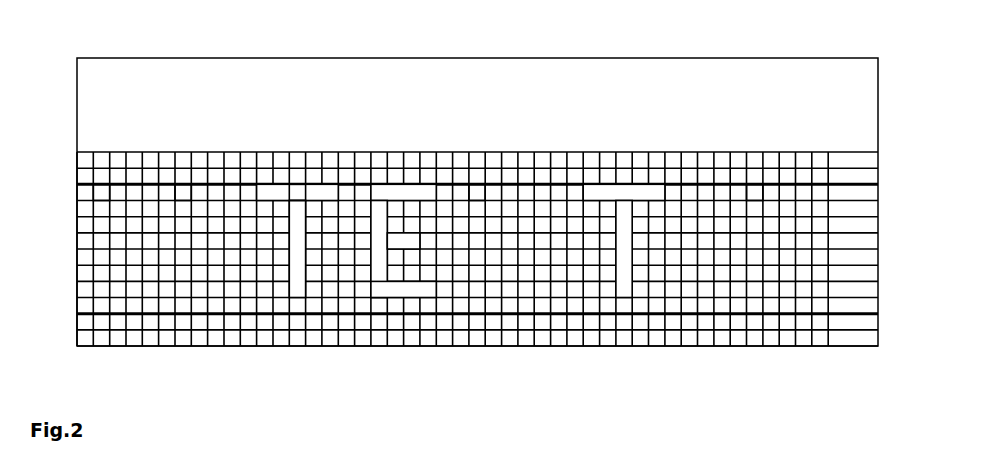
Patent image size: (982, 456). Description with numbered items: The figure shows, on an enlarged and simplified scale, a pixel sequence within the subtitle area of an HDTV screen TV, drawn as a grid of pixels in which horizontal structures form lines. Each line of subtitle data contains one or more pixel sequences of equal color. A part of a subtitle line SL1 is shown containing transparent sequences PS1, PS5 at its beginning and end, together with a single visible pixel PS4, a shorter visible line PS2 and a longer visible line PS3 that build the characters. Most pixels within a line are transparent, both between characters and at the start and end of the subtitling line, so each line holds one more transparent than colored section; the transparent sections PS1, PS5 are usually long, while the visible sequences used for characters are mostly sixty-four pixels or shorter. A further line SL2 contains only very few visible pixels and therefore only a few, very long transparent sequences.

The HDTV screen TV is at (140, 73).
The subtitle line SL1 is at (77, 184).
The line SL2 is at (77, 314).
The transparent sequence PS1 is at (95, 184).
The shorter visible line PS2 is at (173, 184).
The longer visible line PS3 is at (288, 184).
The single visible pixel PS4 is at (467, 184).
The transparent sequence PS5 is at (744, 184).